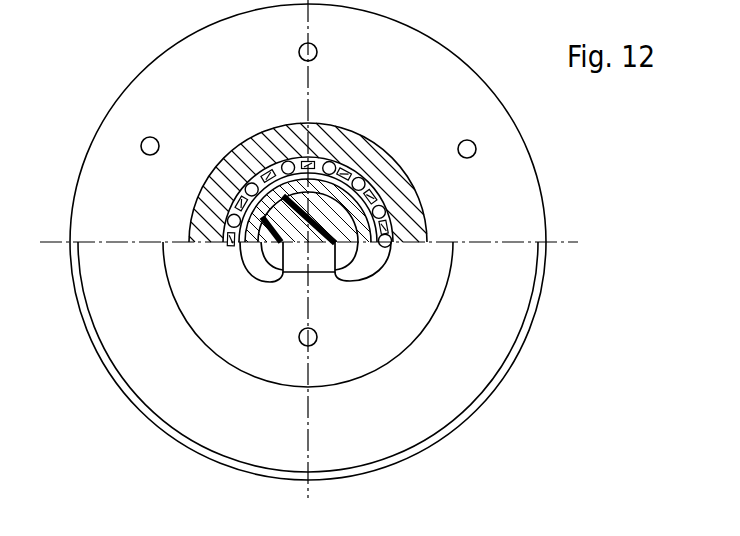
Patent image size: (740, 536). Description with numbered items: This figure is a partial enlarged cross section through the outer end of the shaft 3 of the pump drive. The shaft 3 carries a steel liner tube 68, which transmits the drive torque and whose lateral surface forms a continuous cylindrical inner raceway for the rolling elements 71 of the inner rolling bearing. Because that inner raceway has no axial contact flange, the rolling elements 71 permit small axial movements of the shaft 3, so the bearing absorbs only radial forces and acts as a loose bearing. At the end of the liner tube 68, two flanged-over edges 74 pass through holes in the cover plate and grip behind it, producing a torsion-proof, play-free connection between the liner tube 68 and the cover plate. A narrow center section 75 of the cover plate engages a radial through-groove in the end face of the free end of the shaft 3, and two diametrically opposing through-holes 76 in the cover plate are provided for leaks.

The shaft 3 is at (330, 208).
The liner tube 68 is at (355, 207).
The rolling elements 71 is at (381, 212).
The flanged-over edges 74 is at (256, 258).
The center section 75 is at (317, 257).
The through-holes 76 is at (297, 343).